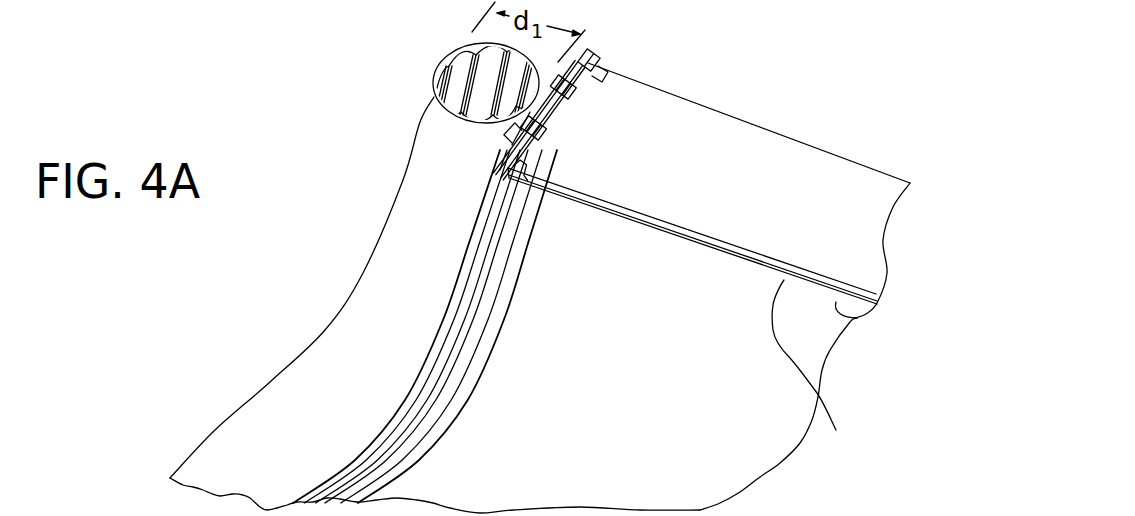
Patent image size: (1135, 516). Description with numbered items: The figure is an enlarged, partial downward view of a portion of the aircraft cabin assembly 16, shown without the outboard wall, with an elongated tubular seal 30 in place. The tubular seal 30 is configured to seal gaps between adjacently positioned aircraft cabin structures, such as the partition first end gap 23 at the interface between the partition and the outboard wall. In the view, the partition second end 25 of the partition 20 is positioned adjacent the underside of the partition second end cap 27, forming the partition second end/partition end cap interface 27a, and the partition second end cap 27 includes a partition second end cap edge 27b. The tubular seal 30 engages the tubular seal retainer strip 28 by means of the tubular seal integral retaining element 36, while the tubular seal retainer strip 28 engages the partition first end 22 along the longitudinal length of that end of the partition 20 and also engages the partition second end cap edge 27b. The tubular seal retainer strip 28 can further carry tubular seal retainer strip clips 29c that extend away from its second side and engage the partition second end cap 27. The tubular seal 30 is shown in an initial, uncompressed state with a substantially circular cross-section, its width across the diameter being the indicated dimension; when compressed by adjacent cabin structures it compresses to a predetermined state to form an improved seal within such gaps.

The aircraft cabin assembly 16 is at (838, 383).
The partition 20 is at (609, 391).
The partition first end 22 is at (437, 407).
The partition first end gap 23 is at (525, 236).
The partition second end 25 is at (857, 318).
The partition second end cap 27 is at (772, 202).
The partition second end/partition end cap interface 27a is at (823, 373).
The partition second end cap edge 27b is at (548, 100).
The tubular seal retainer strip 28 is at (592, 52).
The tubular seal retainer strip clips 29c is at (502, 147).
The tubular seal 30 is at (387, 293).
The tubular seal integral retaining element 36 is at (575, 87).